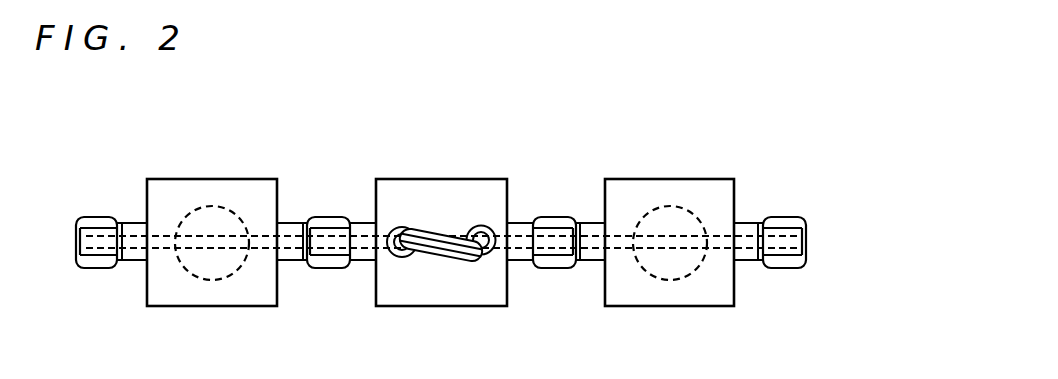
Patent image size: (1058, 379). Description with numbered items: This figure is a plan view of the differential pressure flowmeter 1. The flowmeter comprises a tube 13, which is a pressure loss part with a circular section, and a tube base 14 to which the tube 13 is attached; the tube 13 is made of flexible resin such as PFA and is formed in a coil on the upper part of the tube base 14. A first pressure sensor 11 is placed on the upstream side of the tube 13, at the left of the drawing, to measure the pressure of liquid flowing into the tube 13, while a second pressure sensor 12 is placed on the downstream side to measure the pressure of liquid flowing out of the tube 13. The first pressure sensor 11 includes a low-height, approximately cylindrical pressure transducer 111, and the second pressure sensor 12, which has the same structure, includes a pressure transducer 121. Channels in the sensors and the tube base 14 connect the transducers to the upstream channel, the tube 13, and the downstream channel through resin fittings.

The differential pressure flowmeter 1 is at (130, 128).
The first pressure sensor 11 is at (212, 306).
The pressure transducer 111 is at (240, 267).
The second pressure sensor 12 is at (670, 306).
The pressure transducer 121 is at (698, 267).
The tube 13 is at (451, 257).
The tube base 14 is at (411, 306).